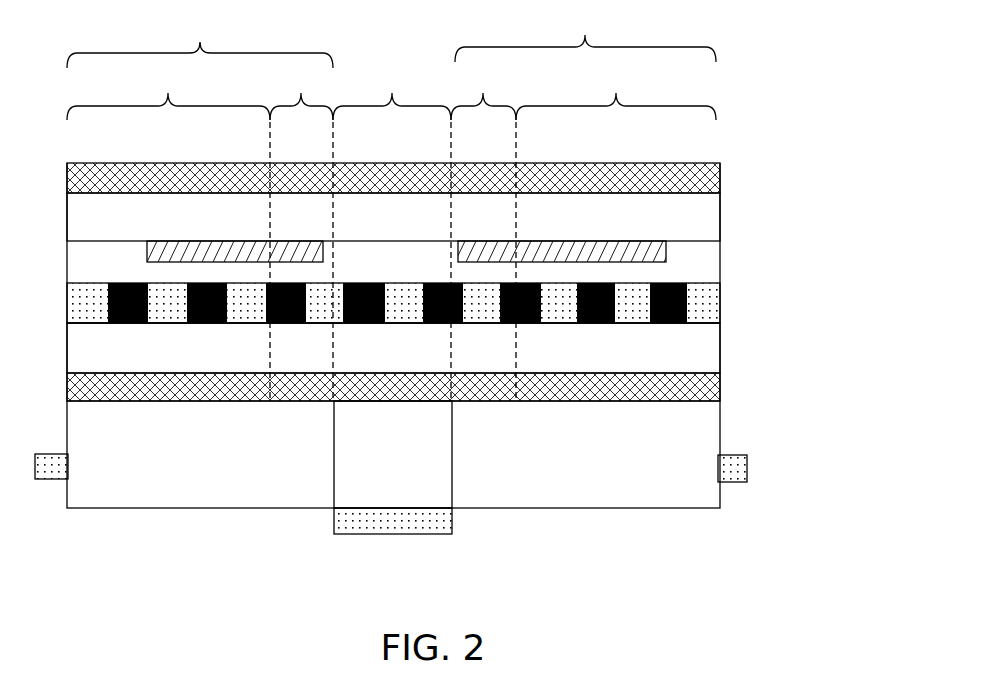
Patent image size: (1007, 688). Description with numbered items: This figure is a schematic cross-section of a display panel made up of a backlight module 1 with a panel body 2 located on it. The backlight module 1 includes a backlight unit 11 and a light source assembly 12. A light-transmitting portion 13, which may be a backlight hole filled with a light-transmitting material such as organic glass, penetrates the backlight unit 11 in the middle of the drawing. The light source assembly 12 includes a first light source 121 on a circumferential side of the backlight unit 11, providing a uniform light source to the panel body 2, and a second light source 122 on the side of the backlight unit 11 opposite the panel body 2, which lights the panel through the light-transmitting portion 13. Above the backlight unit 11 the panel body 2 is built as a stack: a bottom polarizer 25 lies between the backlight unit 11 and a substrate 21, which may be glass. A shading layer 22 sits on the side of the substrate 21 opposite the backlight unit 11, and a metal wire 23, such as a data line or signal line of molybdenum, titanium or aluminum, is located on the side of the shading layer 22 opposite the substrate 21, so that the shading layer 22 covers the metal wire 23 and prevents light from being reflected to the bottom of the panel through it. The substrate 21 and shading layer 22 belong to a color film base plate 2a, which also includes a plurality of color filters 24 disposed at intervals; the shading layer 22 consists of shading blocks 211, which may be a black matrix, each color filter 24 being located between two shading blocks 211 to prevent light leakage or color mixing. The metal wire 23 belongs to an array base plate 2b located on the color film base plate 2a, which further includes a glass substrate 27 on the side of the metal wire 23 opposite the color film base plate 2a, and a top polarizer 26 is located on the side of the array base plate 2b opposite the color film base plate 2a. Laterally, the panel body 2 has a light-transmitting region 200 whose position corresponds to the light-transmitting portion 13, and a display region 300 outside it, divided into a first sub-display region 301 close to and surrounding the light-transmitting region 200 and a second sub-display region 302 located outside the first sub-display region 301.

The backlight module 1 is at (391, 503).
The backlight unit 11 is at (555, 490).
The light source assembly 12 is at (391, 529).
The first light source 121 is at (37, 480).
The second light source 122 is at (333, 528).
The light-transmitting portion 13 is at (408, 465).
The panel body 2 is at (479, 257).
The color film base plate 2a is at (479, 329).
The array base plate 2b is at (479, 234).
The substrate 21 is at (686, 356).
The shading layer 22 is at (680, 335).
The shading block 211 is at (591, 323).
The metal wire 23 is at (670, 254).
The color filter 24 is at (708, 301).
The bottom polarizer 25 is at (706, 396).
The top polarizer 26 is at (720, 177).
The substrate 27 is at (683, 213).
The light-transmitting region 200 is at (392, 93).
The display region 300 is at (391, 204).
The first sub-display region 301 is at (393, 234).
The second sub-display region 302 is at (391, 233).